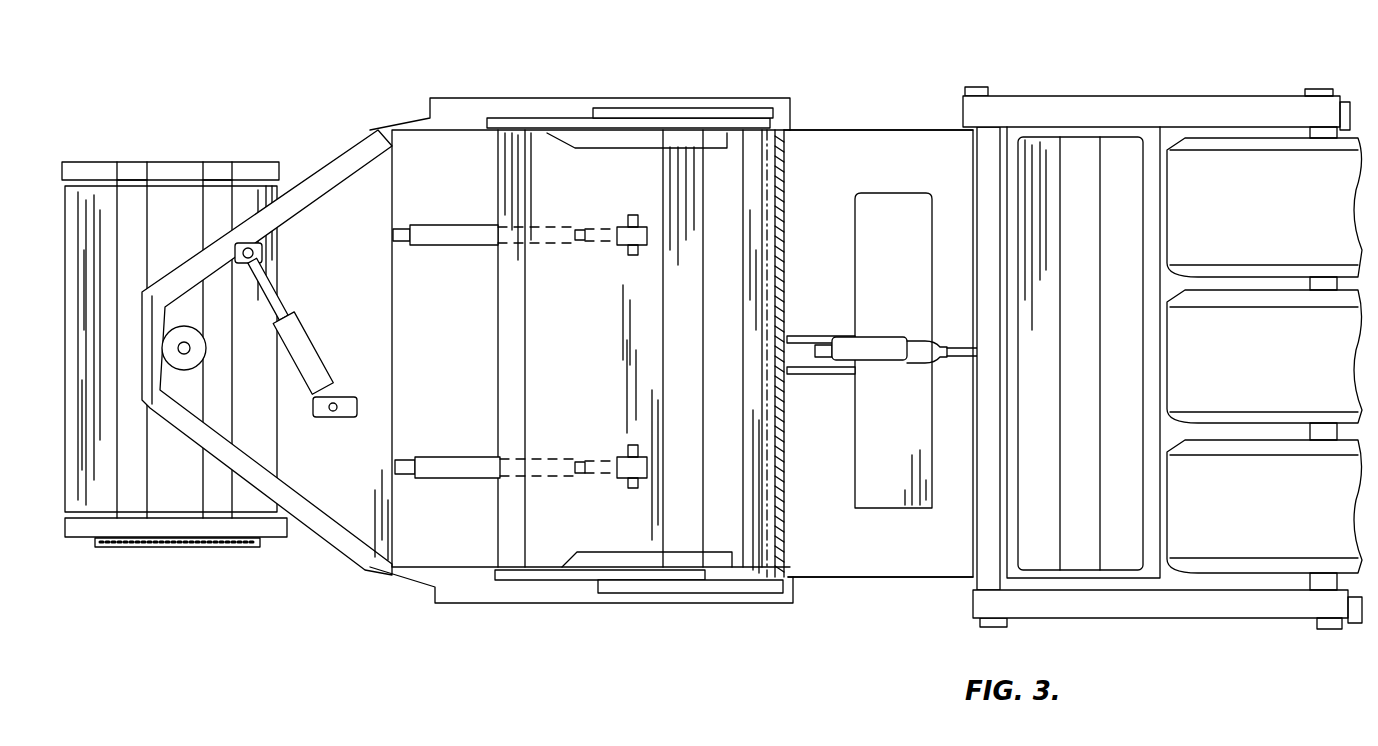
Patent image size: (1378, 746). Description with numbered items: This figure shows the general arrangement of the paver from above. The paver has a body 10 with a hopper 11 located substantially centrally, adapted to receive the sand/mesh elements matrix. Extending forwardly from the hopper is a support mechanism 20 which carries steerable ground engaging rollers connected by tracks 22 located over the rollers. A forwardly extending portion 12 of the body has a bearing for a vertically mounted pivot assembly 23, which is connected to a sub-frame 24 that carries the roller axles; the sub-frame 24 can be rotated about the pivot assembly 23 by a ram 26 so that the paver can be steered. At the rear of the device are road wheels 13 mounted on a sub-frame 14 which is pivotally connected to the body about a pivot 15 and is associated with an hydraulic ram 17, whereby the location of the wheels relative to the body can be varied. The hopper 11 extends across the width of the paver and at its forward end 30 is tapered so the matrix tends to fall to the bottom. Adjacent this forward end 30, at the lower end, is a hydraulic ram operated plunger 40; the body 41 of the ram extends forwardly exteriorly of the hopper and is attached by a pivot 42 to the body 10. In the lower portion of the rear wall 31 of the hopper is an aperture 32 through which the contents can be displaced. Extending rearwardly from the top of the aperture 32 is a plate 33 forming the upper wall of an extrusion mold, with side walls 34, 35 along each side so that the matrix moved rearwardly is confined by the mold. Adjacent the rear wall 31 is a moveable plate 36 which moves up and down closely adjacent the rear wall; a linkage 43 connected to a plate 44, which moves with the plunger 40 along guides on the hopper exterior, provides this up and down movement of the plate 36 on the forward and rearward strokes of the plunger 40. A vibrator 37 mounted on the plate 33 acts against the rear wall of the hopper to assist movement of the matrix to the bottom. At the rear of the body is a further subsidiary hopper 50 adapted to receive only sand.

The body 10 is at (815, 103).
The hopper 11 is at (633, 183).
The forwardly extending portion 12 is at (322, 168).
The road wheels 13 is at (1287, 228).
The sub-frame 14 is at (1242, 113).
The pivot 15 is at (991, 88).
The hydraulic ram 17 is at (873, 337).
The support mechanism 20 is at (180, 160).
The tracks 22 is at (97, 182).
The pivot assembly 23 is at (182, 349).
The sub-frame 24 is at (137, 515).
The ram 26 is at (306, 340).
The forward end 30 is at (560, 297).
The rear wall 31 is at (784, 172).
The aperture 32 is at (732, 320).
The plate 33 is at (922, 147).
The side wall 34 is at (880, 578).
The side wall 35 is at (870, 128).
The moveable plate 36 is at (748, 523).
The vibrator 37 is at (905, 452).
The plunger 40 is at (682, 507).
The body of the ram 41 is at (457, 233).
The pivot 42 is at (397, 224).
The linkage 43 is at (720, 117).
The plate 44 is at (558, 118).
The subsidiary hopper 50 is at (1117, 150).